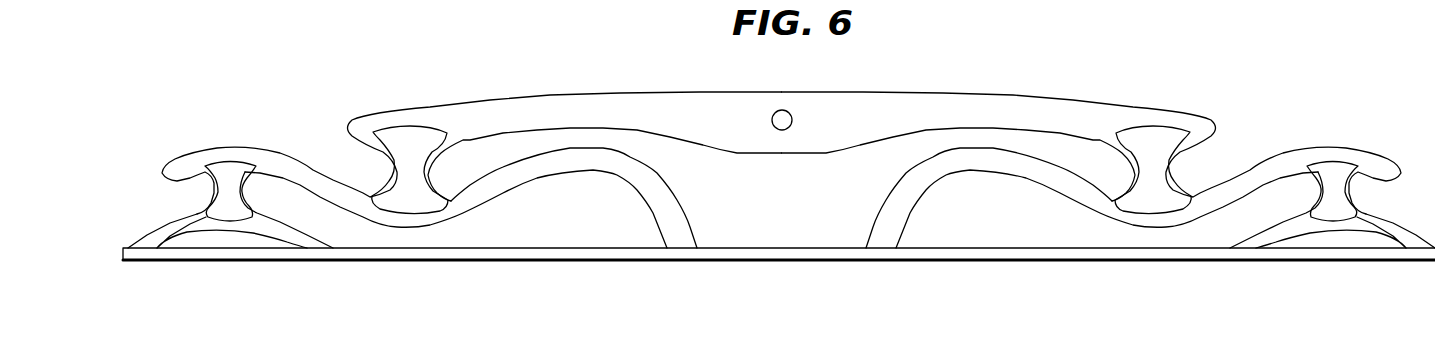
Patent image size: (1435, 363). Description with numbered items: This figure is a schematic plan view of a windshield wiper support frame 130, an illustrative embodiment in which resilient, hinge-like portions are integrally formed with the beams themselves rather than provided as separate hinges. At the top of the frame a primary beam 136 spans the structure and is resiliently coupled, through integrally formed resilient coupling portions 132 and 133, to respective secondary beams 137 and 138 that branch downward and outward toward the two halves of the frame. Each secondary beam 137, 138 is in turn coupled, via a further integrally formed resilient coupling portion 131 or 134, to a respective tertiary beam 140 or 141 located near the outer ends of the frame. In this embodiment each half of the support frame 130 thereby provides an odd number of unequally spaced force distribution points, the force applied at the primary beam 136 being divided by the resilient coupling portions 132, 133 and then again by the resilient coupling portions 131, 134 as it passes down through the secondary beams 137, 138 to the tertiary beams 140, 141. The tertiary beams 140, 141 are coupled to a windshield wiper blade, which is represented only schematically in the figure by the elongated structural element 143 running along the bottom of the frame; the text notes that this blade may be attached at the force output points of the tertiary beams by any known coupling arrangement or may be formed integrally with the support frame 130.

The windshield wiper support frame 130 is at (790, 311).
The resilient coupling portion 131 is at (225, 163).
The resilient coupling portion 132 is at (407, 137).
The resilient coupling portion 133 is at (1153, 137).
The resilient coupling portion 134 is at (1330, 165).
The primary beam 136 is at (922, 108).
The secondary beam 137 is at (652, 183).
The secondary beam 138 is at (903, 180).
The tertiary beam 140 is at (151, 242).
The tertiary beam 141 is at (1258, 242).
The structural element 143 is at (995, 252).